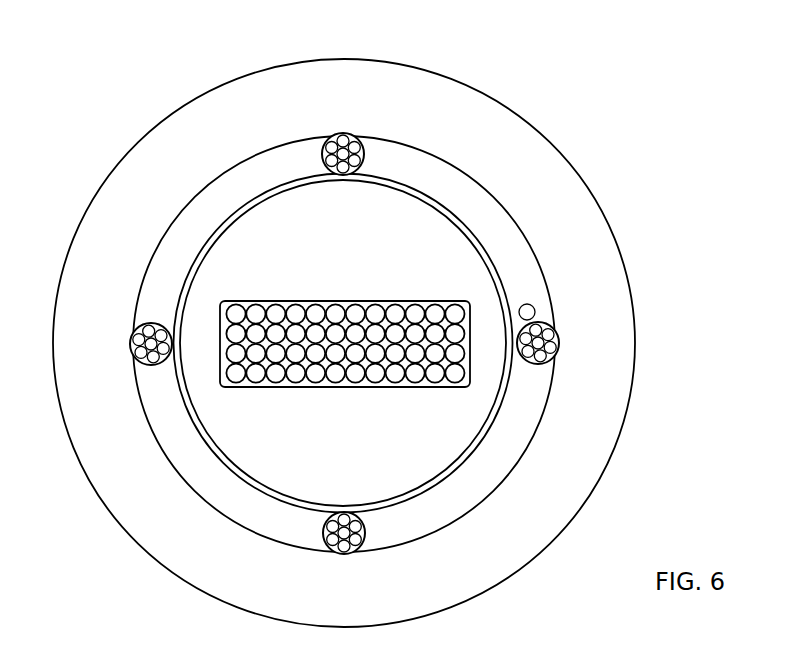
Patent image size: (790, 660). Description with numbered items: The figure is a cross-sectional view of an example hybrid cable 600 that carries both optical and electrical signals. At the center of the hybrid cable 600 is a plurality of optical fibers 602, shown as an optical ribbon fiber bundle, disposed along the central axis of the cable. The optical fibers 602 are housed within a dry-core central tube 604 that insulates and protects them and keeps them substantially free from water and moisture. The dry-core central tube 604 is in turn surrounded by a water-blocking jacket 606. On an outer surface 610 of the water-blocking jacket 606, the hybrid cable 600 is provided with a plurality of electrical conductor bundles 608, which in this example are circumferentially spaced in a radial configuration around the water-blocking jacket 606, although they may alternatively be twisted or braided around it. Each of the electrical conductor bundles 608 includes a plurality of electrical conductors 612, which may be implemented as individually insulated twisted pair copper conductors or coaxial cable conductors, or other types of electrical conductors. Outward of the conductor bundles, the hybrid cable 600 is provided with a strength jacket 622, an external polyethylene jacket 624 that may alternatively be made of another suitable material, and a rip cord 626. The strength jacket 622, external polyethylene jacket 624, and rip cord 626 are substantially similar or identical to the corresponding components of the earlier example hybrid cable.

The hybrid cable 600 is at (157, 94).
The optical fibers 602 is at (449, 298).
The dry-core central tube 604 is at (361, 243).
The water-blocking jacket 606 is at (392, 184).
The electrical conductor bundles 608 is at (348, 331).
The outer surface 610 is at (492, 445).
The electrical conductors 612 is at (331, 153).
The strength jacket 622 is at (235, 172).
The external polyethylene jacket 624 is at (630, 392).
The rip cord 626 is at (536, 311).